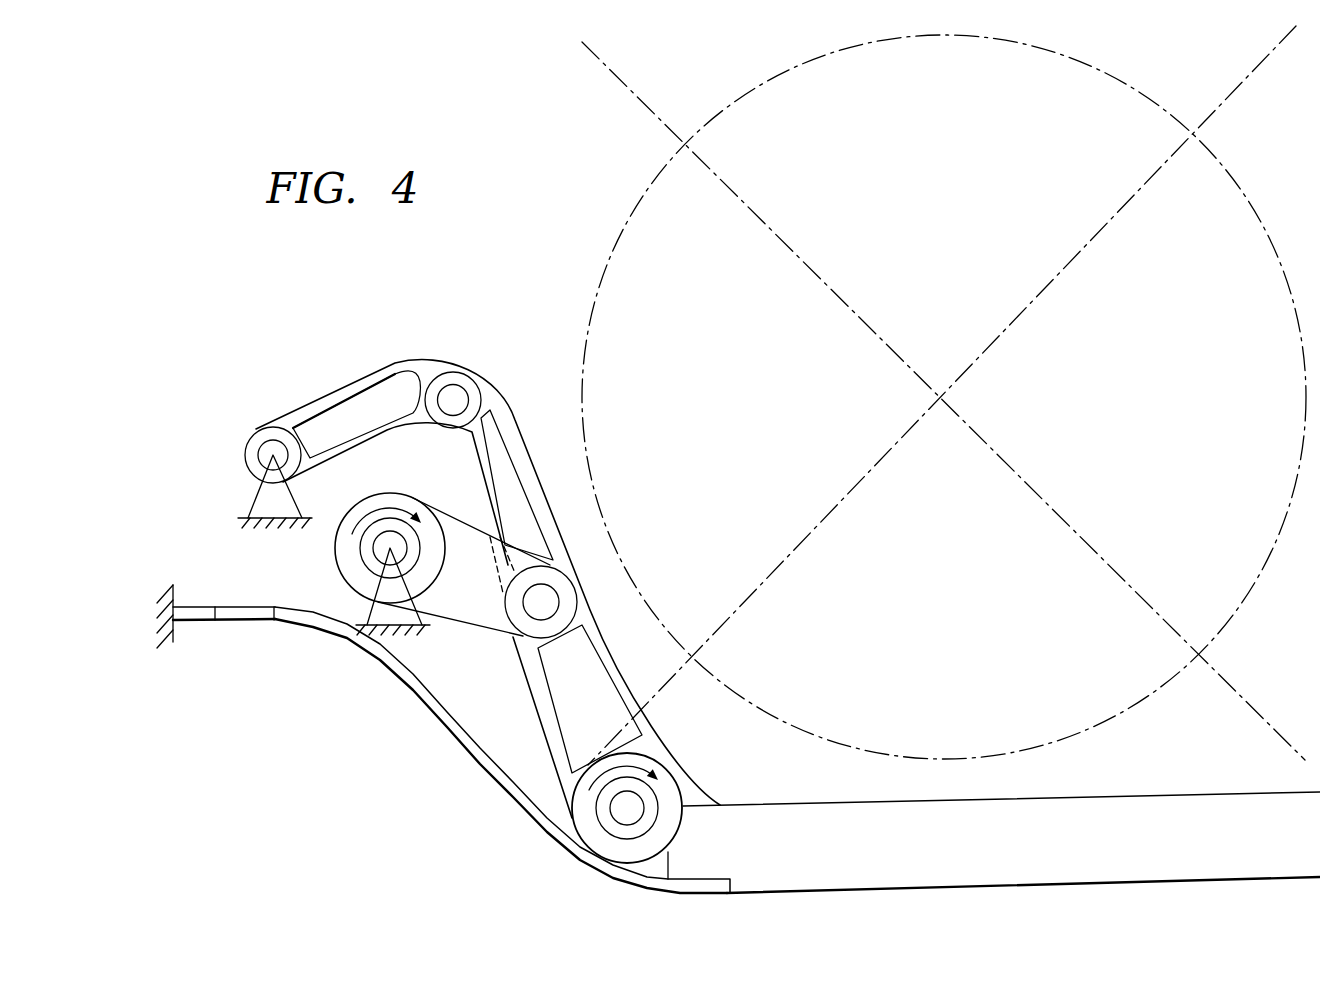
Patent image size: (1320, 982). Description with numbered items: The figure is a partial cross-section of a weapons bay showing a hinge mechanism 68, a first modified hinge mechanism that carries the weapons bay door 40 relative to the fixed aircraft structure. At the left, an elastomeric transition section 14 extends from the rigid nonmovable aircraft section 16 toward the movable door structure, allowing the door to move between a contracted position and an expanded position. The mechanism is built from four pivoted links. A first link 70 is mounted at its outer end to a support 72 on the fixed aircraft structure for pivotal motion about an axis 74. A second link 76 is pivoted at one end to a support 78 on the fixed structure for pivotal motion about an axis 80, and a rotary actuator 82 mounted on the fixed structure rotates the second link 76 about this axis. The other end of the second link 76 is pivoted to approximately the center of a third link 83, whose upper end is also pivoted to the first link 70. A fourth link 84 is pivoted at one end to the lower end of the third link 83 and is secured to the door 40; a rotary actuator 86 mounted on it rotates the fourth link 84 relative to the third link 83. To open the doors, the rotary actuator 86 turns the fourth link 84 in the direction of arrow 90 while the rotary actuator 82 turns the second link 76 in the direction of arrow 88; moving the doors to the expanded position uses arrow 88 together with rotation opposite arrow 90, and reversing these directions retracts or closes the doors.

The elastomeric transition section 14 is at (452, 734).
The rigid nonmovable aircraft section 16 is at (195, 603).
The weapons bay door 40 is at (1152, 805).
The hinge mechanism 68 is at (467, 568).
The first link 70 is at (430, 358).
The support 72 is at (262, 496).
The axis 74 is at (268, 455).
The second link 76 is at (460, 512).
The support 78 is at (413, 588).
The axis 80 is at (418, 553).
The rotary actuator 82 is at (397, 490).
The third link 83 is at (530, 444).
The fourth link 84 is at (697, 782).
The rotary actuator 86 is at (650, 757).
The arrow 88 is at (352, 557).
The arrow 90 is at (617, 753).